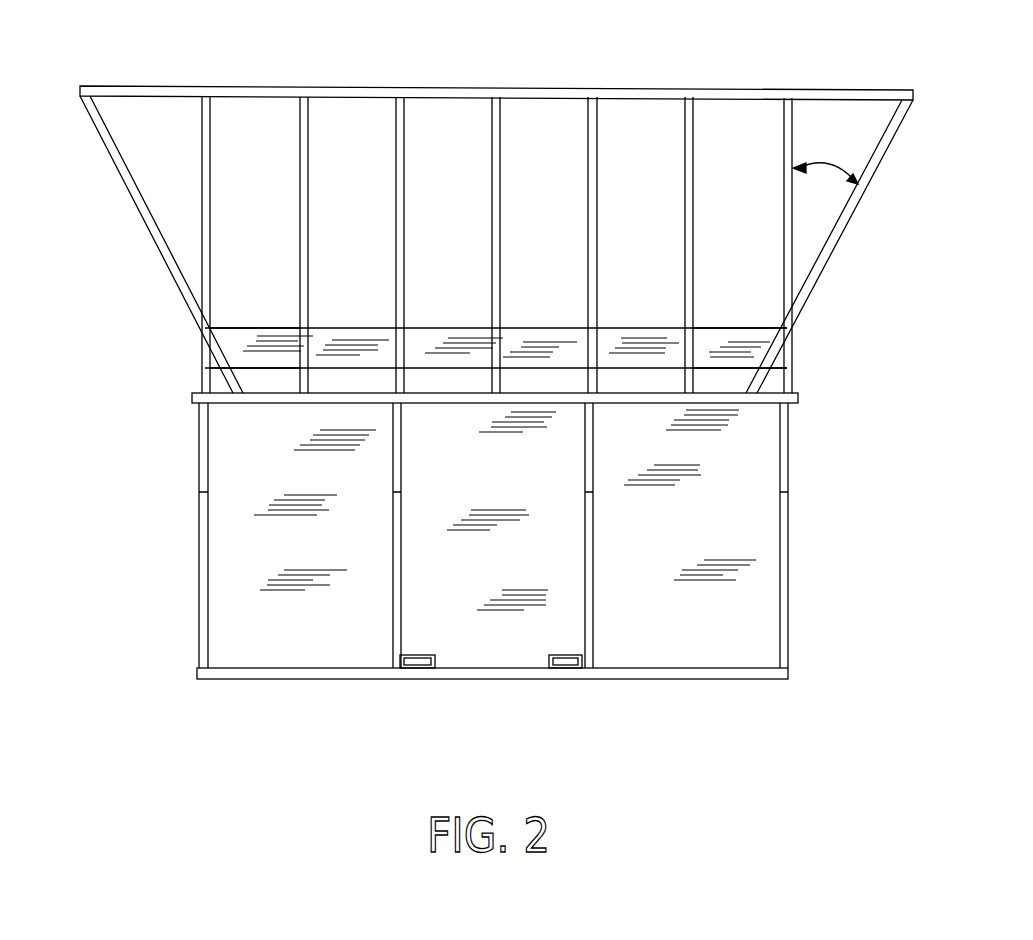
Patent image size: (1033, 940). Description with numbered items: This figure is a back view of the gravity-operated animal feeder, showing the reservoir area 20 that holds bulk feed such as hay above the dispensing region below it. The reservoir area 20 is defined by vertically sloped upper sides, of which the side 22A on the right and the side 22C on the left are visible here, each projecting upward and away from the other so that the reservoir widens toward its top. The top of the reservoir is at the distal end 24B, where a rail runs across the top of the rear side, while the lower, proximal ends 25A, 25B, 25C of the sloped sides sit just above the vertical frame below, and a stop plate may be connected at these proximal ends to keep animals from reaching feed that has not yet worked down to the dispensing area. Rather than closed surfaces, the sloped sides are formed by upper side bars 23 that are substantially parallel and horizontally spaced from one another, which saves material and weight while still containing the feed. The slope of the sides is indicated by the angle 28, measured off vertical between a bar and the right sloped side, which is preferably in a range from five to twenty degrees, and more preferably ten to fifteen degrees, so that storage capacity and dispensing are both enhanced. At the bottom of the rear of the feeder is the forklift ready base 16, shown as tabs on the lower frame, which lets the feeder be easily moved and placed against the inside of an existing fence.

The forklift ready base 16 is at (413, 668).
The reservoir area 20 is at (493, 375).
The vertically sloped upper side 22A is at (838, 240).
The vertically sloped upper side 22C is at (146, 224).
The upper side bars 23 is at (202, 131).
The distal end 24B is at (318, 87).
The proximal end 25A is at (760, 380).
The proximal end 25B is at (500, 328).
The proximal end 25C is at (218, 356).
The angle 28 is at (832, 160).